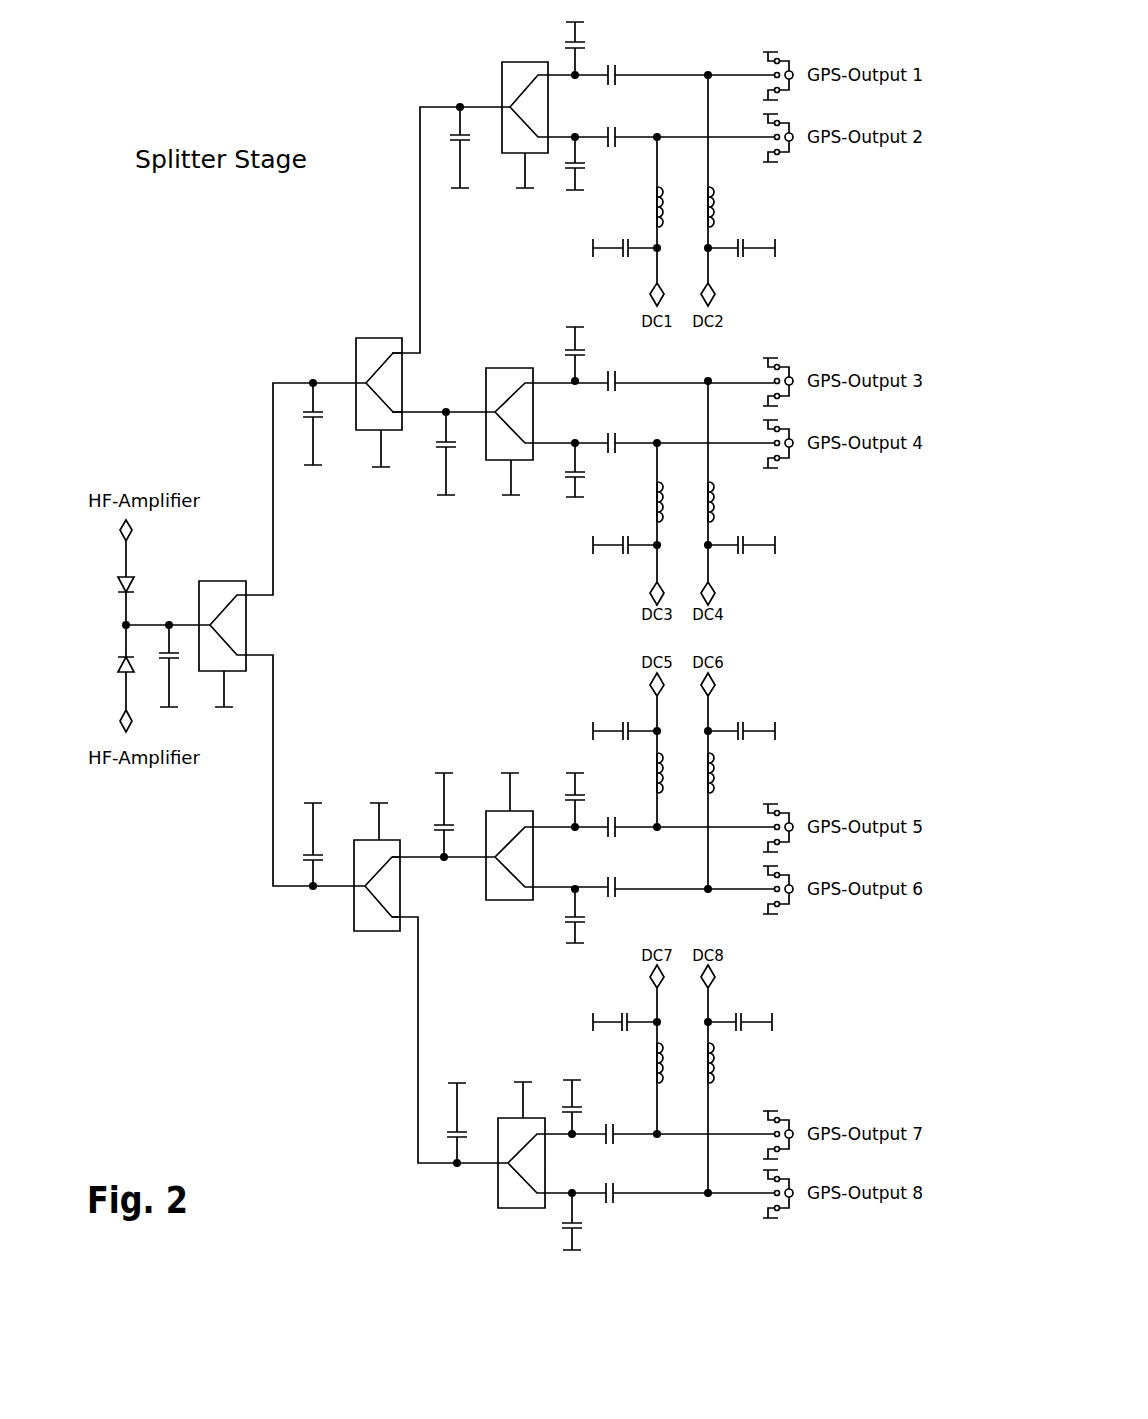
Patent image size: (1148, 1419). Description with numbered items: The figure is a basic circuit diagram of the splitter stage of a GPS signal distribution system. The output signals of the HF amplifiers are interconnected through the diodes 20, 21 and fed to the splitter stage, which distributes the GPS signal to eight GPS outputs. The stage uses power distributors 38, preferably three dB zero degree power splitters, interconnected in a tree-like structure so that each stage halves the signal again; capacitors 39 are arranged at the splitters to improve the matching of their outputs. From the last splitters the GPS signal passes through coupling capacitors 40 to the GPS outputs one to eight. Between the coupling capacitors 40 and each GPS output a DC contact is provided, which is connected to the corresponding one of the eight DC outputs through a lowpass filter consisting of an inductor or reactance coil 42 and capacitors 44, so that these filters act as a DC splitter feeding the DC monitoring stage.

The diode 20 is at (127, 577).
The diode 21 is at (120, 662).
The power distributor 38 is at (240, 620).
The capacitor 39 is at (318, 417).
The coupling capacitor 40 is at (618, 67).
The inductor or reactance coil 42 is at (662, 197).
The capacitor 44 is at (623, 258).